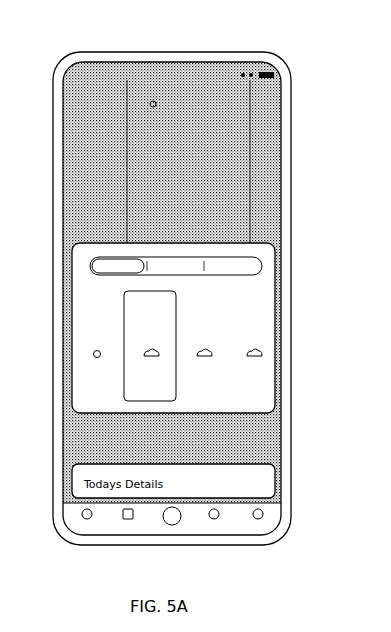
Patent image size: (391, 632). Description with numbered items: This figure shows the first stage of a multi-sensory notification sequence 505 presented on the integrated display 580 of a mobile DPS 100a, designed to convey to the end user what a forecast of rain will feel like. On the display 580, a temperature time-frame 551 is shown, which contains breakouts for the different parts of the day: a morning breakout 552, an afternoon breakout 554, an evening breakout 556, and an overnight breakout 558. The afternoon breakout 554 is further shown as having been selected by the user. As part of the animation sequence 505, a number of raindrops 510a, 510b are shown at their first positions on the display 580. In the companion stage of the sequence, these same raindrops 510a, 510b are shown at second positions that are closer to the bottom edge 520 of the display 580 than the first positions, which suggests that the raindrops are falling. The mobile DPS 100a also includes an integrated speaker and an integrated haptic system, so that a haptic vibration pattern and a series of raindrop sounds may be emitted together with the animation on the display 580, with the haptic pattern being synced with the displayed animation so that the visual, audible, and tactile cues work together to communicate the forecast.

The mobile DPS 100a is at (283, 530).
The multi-sensory notification sequence 505 is at (304, 79).
The display 580 is at (281, 160).
The raindrop 510a is at (63, 166).
The raindrop 510b is at (281, 202).
The temperature time-frame 551 is at (262, 280).
The morning breakout 552 is at (126, 292).
The afternoon breakout 554 is at (137, 388).
The evening breakout 556 is at (209, 382).
The overnight breakout 558 is at (268, 316).
The bottom edge 520 is at (103, 535).